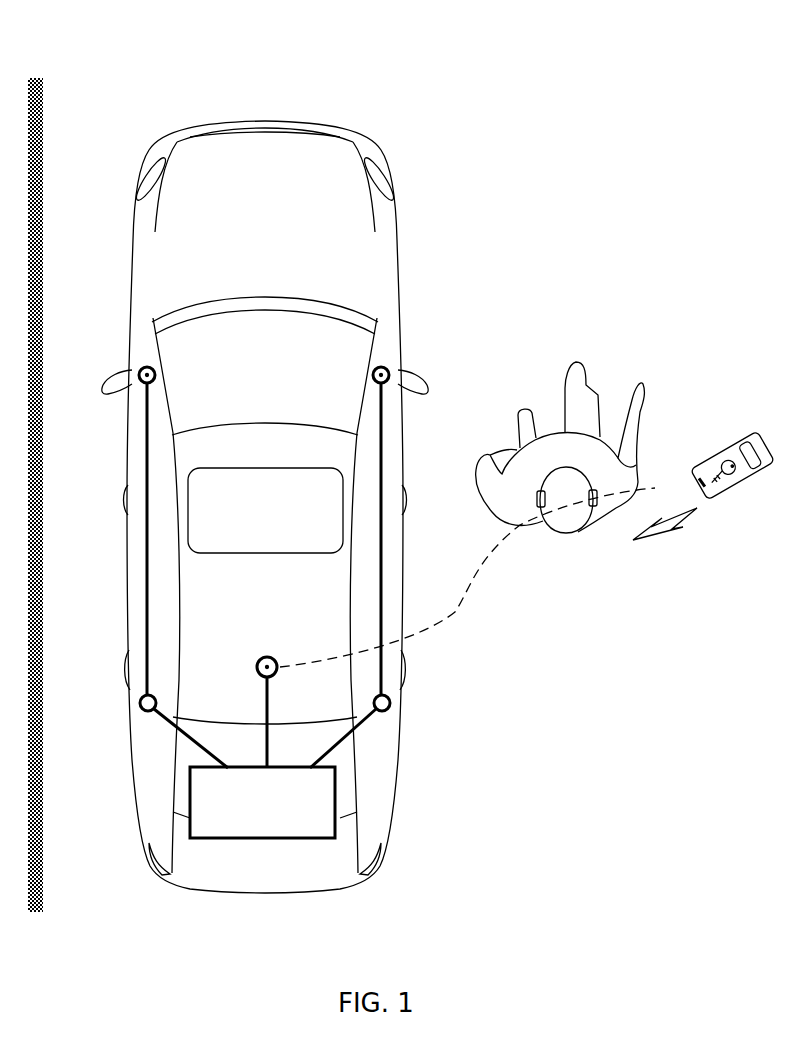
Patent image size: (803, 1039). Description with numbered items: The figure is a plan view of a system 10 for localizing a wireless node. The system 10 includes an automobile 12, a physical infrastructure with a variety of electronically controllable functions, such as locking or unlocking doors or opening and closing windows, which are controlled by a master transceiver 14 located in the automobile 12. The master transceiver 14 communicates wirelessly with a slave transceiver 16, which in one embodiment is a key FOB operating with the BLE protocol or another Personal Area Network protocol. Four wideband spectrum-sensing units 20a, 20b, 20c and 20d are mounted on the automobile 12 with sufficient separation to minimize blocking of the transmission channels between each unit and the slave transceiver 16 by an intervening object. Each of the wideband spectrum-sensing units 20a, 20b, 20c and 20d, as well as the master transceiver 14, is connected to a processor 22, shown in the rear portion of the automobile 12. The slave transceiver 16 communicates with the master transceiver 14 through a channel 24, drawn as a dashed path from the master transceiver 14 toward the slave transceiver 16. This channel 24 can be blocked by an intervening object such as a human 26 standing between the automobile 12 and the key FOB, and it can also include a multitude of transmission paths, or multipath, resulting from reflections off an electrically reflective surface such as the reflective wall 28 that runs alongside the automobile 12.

The system 10 is at (588, 62).
The automobile 12 is at (398, 237).
The master transceiver 14 is at (263, 654).
The slave transceiver 16 is at (733, 438).
The wideband spectrum-sensing unit 20a is at (388, 364).
The wideband spectrum-sensing unit 20b is at (140, 367).
The wideband spectrum-sensing unit 20c is at (393, 700).
The wideband spectrum-sensing unit 20d is at (138, 700).
The processor 22 is at (276, 815).
The channel 24 is at (455, 604).
The human 26 is at (568, 533).
The reflective wall 28 is at (44, 876).